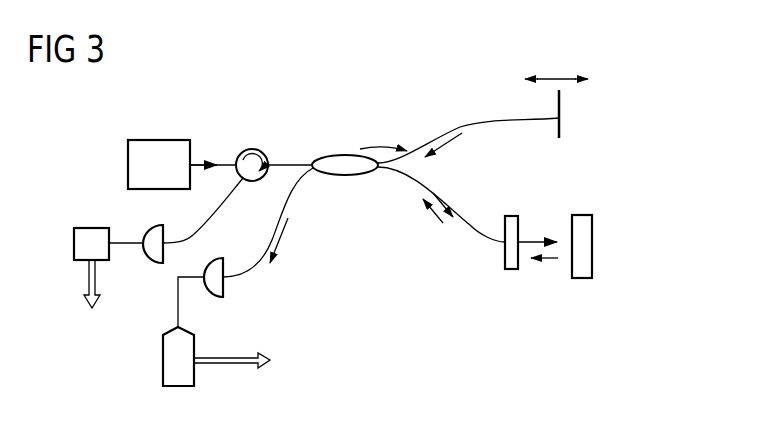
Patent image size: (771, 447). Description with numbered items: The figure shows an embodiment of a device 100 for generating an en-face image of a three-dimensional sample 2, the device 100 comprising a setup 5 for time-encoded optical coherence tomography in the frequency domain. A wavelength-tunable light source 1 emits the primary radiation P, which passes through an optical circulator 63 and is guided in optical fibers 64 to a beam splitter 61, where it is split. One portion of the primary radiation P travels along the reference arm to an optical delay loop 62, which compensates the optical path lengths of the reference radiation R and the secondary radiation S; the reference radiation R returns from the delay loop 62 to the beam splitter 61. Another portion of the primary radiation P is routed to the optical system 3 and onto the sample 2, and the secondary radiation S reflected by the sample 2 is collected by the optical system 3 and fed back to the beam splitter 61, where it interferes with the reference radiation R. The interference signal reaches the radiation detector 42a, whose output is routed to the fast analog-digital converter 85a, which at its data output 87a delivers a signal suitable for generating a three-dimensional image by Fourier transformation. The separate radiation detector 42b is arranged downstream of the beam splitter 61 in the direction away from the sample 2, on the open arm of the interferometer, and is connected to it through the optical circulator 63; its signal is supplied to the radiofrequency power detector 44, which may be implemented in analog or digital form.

The wavelength-tunable light source 1 is at (160, 140).
The sample 2 is at (592, 248).
The optical system 3 is at (511, 269).
The setup for time-encoded optical coherence tomography 5 is at (695, 61).
The device 100 is at (700, 62).
The radiofrequency power detector 44 is at (92, 228).
The radiation detector 42a is at (227, 285).
The radiation detector 42b is at (148, 263).
The beam splitter 61 is at (345, 155).
The optical delay loop 62 is at (562, 108).
The optical circulator 63 is at (253, 150).
The optical fibers 64 is at (272, 226).
The analog-digital converter 85a is at (163, 360).
The data output 87a is at (213, 365).
The primary radiation P is at (222, 162).
The reference radiation R is at (447, 148).
The secondary radiation S is at (550, 260).